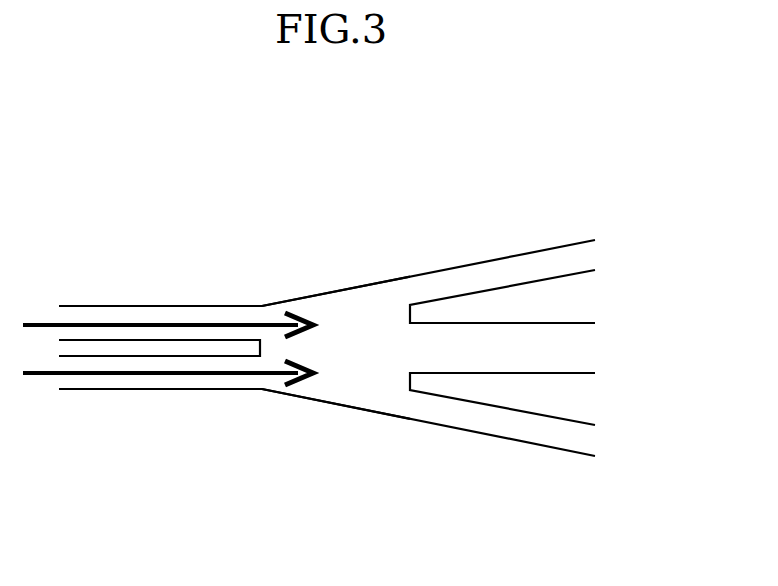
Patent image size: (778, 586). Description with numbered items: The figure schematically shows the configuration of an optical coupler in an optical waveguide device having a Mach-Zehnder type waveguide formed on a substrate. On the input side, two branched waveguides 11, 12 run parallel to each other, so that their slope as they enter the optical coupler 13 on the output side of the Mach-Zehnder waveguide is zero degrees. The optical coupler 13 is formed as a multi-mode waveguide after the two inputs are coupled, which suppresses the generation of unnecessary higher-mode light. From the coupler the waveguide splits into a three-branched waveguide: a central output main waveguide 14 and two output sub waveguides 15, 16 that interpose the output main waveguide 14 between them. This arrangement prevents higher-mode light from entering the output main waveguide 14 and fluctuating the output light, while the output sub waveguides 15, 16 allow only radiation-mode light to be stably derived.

The branched waveguide 11 is at (138, 310).
The branched waveguide 12 is at (137, 385).
The optical coupler 13 is at (351, 288).
The output main waveguide 14 is at (547, 357).
The output sub waveguide 15 is at (505, 273).
The output sub waveguide 16 is at (505, 424).